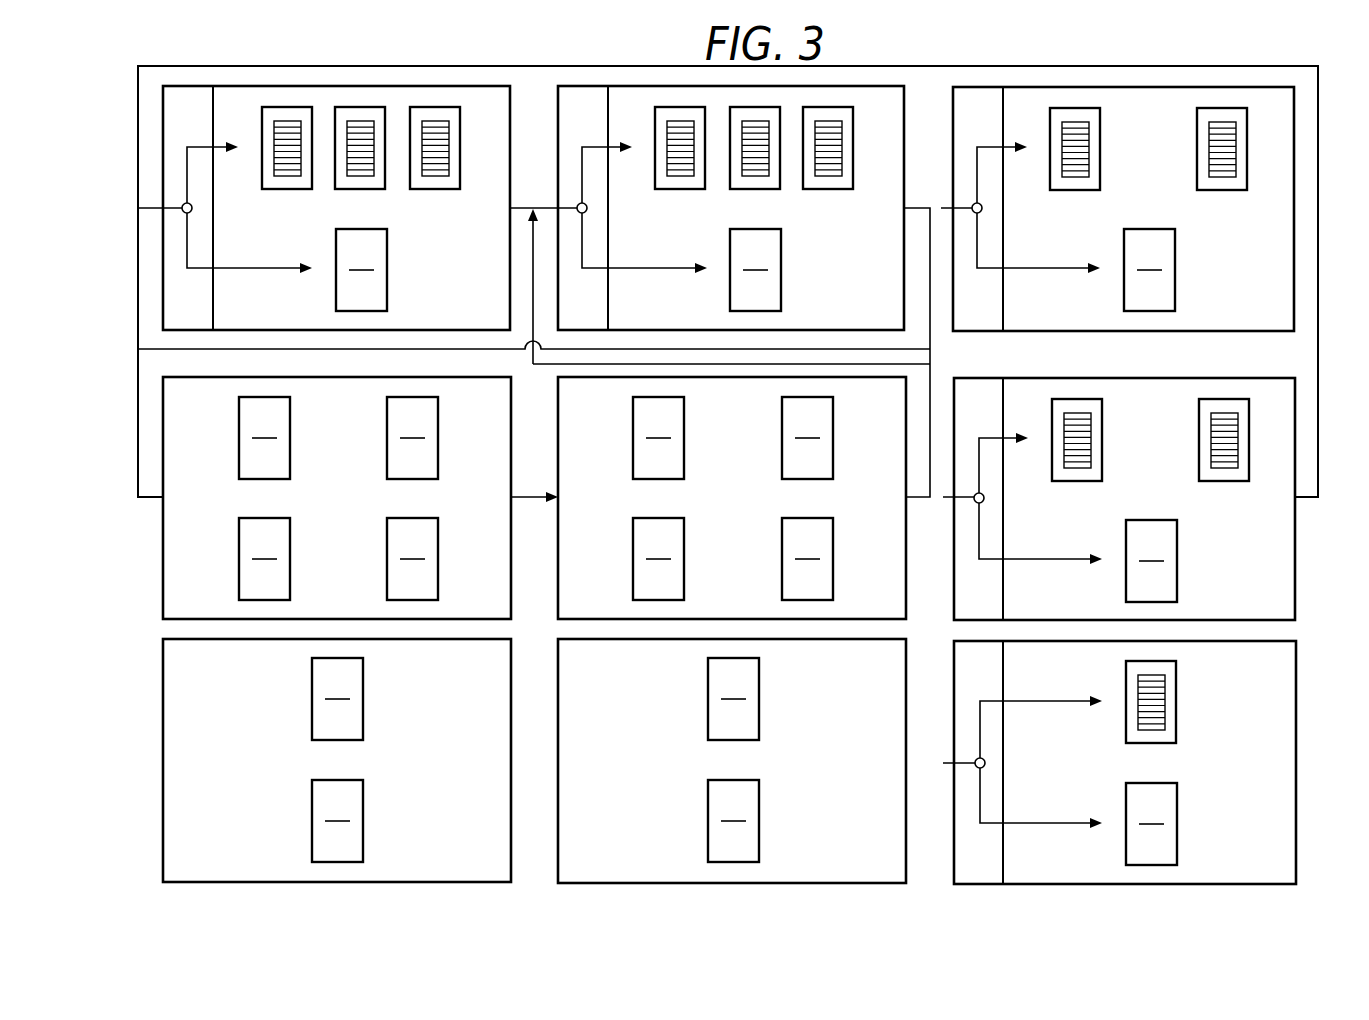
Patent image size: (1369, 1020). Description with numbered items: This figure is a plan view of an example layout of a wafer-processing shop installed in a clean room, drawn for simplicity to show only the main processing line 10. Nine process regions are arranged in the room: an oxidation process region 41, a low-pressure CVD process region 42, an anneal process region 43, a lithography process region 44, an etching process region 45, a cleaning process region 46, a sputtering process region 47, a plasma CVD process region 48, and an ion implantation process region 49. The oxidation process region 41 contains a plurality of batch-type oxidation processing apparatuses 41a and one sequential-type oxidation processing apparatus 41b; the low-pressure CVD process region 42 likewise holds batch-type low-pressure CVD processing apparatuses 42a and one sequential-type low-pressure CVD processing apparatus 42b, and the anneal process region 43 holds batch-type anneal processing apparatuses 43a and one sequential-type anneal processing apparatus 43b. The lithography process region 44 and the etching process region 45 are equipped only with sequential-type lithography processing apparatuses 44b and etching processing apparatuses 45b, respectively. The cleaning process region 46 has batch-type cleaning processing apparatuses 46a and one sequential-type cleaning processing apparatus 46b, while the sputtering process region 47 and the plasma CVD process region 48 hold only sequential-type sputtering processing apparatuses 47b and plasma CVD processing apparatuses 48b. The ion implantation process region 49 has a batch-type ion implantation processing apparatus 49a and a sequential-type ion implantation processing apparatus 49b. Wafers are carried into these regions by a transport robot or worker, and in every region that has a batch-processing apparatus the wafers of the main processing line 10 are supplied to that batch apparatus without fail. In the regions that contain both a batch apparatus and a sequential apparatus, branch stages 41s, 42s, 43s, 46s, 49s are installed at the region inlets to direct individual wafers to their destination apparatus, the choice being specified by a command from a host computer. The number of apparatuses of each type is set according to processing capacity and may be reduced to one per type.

The main processing line 10 is at (1318, 184).
The oxidation process region 41 is at (236, 86).
The batch-type oxidation processing apparatuses 41a is at (286, 189).
The sequential-type oxidation processing apparatus 41b is at (388, 270).
The branch stage 41s is at (205, 298).
The low-pressure CVD process region 42 is at (640, 86).
The batch-type low-pressure CVD processing apparatuses 42a is at (680, 189).
The sequential-type low-pressure CVD processing apparatus 42b is at (783, 270).
The branch stage 42s is at (600, 298).
The anneal process region 43 is at (1032, 87).
The batch-type anneal processing apparatuses 43a is at (1101, 157).
The sequential-type anneal processing apparatus 43b is at (1176, 270).
The branch stage 43s is at (995, 298).
The lithography process region 44 is at (278, 376).
The lithography processing apparatuses 44b is at (410, 518).
The etching process region 45 is at (558, 412).
The etching processing apparatuses 45b is at (807, 518).
The cleaning process region 46 is at (1095, 377).
The batch-type cleaning processing apparatuses 46a is at (1103, 438).
The sequential-type cleaning processing apparatus 46b is at (1178, 560).
The branch stage 46s is at (995, 582).
The sputtering process region 47 is at (162, 703).
The sputtering processing apparatuses 47b is at (384, 821).
The plasma CVD process region 48 is at (557, 703).
The plasma CVD processing apparatuses 48b is at (780, 821).
The ion implantation process region 49 is at (1297, 742).
The batch-type ion implantation processing apparatus 49a is at (1178, 702).
The sequential-type ion implantation processing apparatus 49b is at (1178, 824).
The branch stage 49s is at (996, 848).